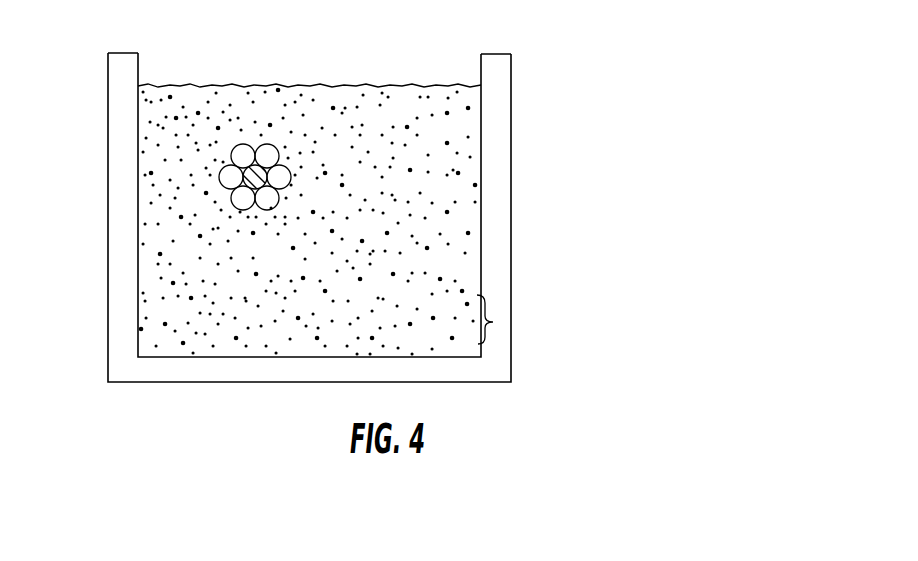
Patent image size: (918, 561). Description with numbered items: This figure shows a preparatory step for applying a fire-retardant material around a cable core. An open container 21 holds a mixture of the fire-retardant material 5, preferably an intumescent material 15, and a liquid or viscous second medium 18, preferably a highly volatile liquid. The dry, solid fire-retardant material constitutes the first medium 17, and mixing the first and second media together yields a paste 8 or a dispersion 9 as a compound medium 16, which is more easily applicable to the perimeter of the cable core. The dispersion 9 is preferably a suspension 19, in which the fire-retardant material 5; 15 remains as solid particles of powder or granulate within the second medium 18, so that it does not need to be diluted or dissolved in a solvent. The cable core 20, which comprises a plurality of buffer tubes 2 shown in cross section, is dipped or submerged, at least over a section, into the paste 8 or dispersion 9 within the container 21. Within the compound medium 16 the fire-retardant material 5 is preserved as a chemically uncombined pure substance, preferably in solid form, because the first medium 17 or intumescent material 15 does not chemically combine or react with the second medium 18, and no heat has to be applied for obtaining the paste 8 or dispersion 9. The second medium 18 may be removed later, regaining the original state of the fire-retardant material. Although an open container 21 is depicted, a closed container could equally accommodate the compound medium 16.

The buffer tubes 2 is at (240, 201).
The cable core 20 is at (178, 116).
The container 21 is at (495, 102).
The fire-retardant material 5 is at (385, 222).
The intumescent material 15 is at (385, 222).
The first medium 17 is at (457, 215).
The paste 8 is at (566, 308).
The dispersion 9 is at (566, 308).
The second medium 18 is at (566, 308).
The suspension 19 is at (493, 322).
The compound medium 16 is at (426, 222).